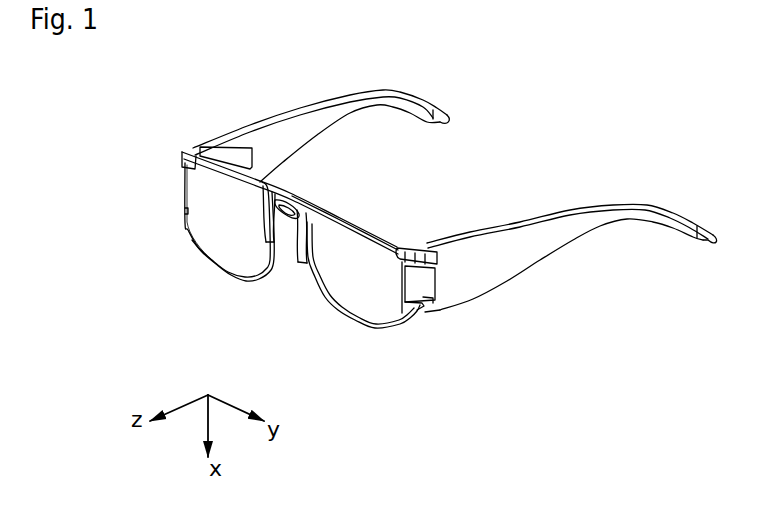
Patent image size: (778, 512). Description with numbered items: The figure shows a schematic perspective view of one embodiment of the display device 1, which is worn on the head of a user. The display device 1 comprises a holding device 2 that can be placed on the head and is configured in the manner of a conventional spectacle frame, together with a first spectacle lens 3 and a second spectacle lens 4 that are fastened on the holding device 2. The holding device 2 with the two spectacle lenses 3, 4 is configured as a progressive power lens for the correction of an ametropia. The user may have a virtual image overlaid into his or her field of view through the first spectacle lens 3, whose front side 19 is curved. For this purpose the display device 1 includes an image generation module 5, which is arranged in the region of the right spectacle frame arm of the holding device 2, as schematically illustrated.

The display device 1 is at (250, 320).
The holding device 2 is at (341, 97).
The first spectacle lens 3 is at (235, 269).
The second spectacle lens 4 is at (344, 318).
The image generation module 5 is at (238, 150).
The front side 19 is at (212, 234).